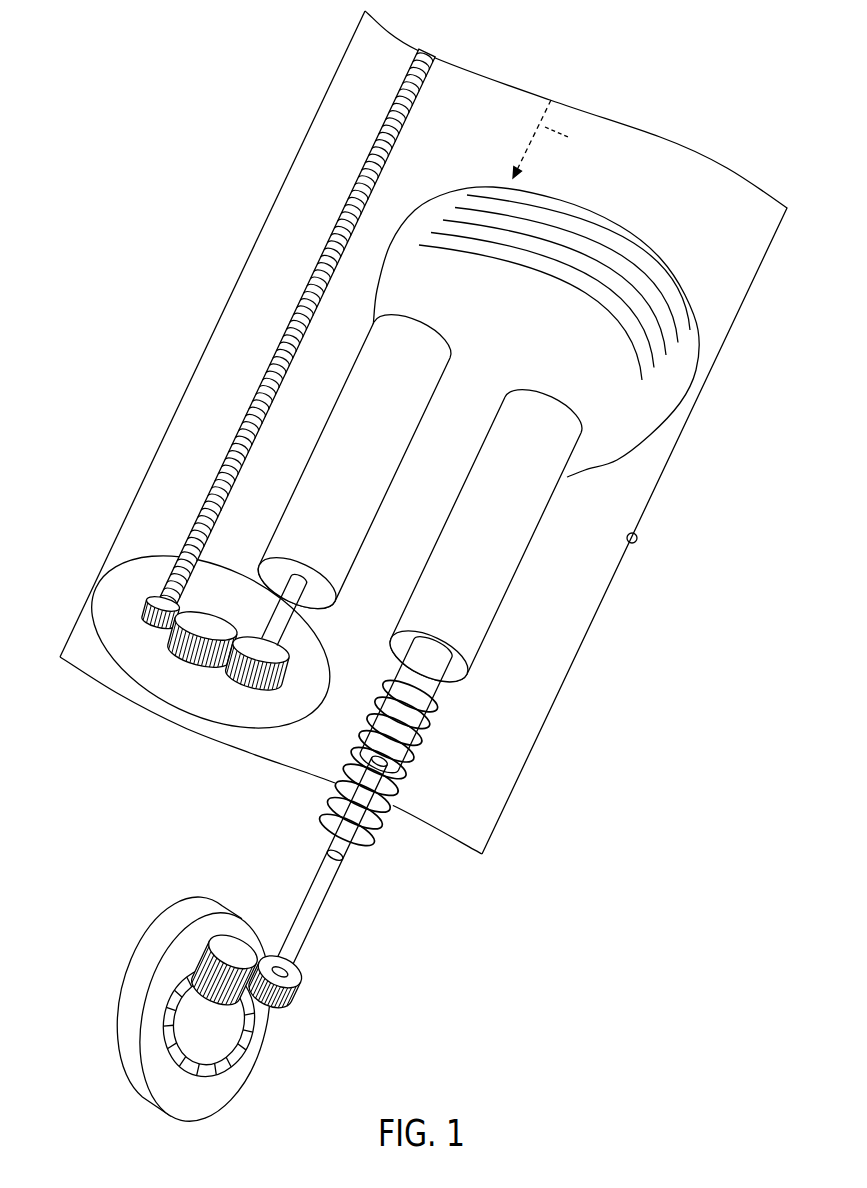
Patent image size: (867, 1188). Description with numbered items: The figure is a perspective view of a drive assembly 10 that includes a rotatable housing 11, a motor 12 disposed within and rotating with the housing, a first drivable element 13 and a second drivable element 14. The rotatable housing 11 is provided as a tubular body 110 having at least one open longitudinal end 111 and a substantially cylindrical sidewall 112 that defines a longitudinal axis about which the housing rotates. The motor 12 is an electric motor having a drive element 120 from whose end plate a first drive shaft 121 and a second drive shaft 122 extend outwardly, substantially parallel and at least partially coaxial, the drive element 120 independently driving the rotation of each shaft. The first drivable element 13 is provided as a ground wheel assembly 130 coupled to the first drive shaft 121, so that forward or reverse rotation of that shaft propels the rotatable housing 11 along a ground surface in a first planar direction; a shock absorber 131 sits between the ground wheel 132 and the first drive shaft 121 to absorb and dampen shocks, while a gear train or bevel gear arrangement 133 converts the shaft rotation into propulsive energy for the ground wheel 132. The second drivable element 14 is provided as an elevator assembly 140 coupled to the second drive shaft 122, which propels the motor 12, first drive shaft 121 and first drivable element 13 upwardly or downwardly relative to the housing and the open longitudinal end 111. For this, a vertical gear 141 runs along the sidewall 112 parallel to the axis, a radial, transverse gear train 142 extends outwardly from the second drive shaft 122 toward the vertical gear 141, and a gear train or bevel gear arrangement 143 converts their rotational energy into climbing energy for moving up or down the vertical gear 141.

The drive assembly 10 is at (104, 846).
The rotatable housing 11 is at (672, 492).
The tubular body 110 is at (673, 442).
The open longitudinal end 111 is at (436, 848).
The substantially cylindrical sidewall 112 is at (650, 537).
The motor 12 is at (652, 257).
The drive element 120 is at (597, 247).
The first drive shaft 121 is at (543, 518).
The second drive shaft 122 is at (440, 390).
The first drivable element 13 is at (341, 931).
The ground wheel assembly 130 is at (358, 806).
The shock absorber 131 is at (420, 755).
The ground wheel 132 is at (223, 1098).
The gear train or bevel gear arrangement 133 is at (196, 938).
The second drivable element 14 is at (164, 718).
The elevator assembly 140 is at (228, 650).
The vertical gear 141 is at (302, 302).
The radial, transverse gear train 142 is at (240, 715).
The gear train or bevel gear arrangement 143 is at (167, 640).